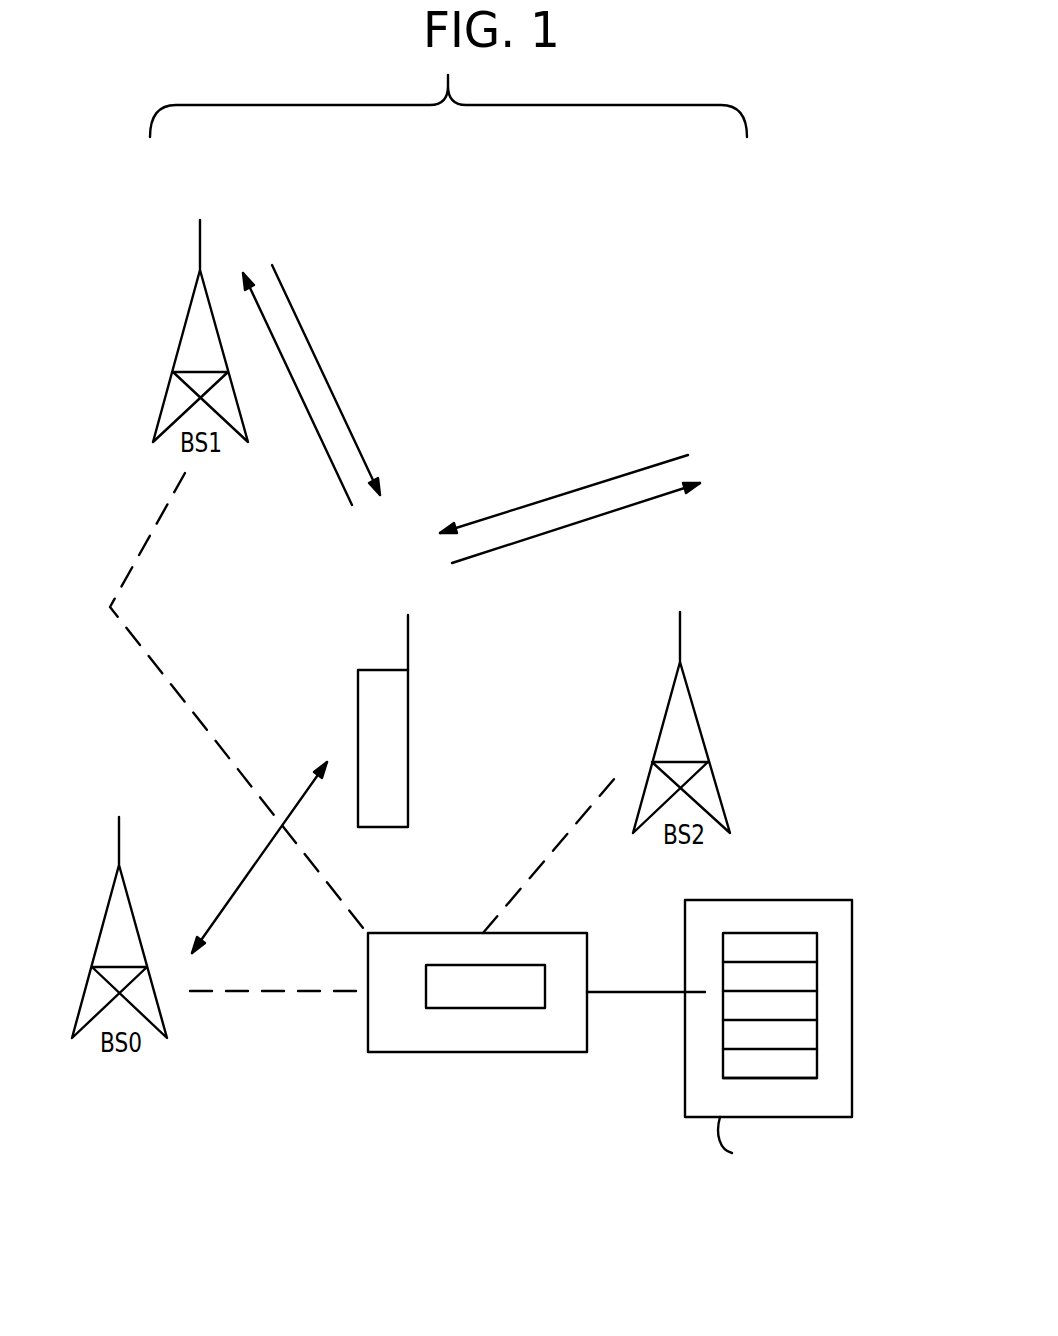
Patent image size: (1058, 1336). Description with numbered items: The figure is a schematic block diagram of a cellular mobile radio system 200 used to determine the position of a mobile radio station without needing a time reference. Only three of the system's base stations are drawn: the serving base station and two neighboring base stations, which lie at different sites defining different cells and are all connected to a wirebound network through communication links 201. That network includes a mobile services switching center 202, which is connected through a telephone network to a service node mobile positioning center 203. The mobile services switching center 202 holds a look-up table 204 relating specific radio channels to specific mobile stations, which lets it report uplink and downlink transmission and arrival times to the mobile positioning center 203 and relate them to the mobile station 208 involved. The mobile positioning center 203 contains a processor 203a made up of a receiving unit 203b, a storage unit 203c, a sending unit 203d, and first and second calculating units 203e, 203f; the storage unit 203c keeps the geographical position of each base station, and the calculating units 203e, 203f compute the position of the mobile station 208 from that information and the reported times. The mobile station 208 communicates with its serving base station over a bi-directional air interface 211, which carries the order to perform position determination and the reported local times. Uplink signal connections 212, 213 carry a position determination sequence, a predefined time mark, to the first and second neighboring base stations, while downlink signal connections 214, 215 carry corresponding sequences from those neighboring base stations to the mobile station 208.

The cellular mobile radio system 200 is at (525, 320).
The communication links 201 is at (152, 532).
The mobile services switching center 202 is at (462, 1052).
The mobile positioning center 203 is at (685, 1077).
The processor 203a is at (773, 933).
The receiving unit 203b is at (808, 953).
The storage unit 203c is at (808, 986).
The sending unit 203d is at (808, 1015).
The first calculating unit 203e is at (808, 1043).
The second calculating unit 203f is at (808, 1071).
The look-up table 204 is at (427, 1008).
The mobile station 208 is at (358, 693).
The air interface 211 is at (300, 797).
The uplink signal connection 212 is at (312, 423).
The uplink signal connection 213 is at (558, 528).
The downlink signal connection 214 is at (318, 362).
The downlink signal connection 215 is at (593, 485).